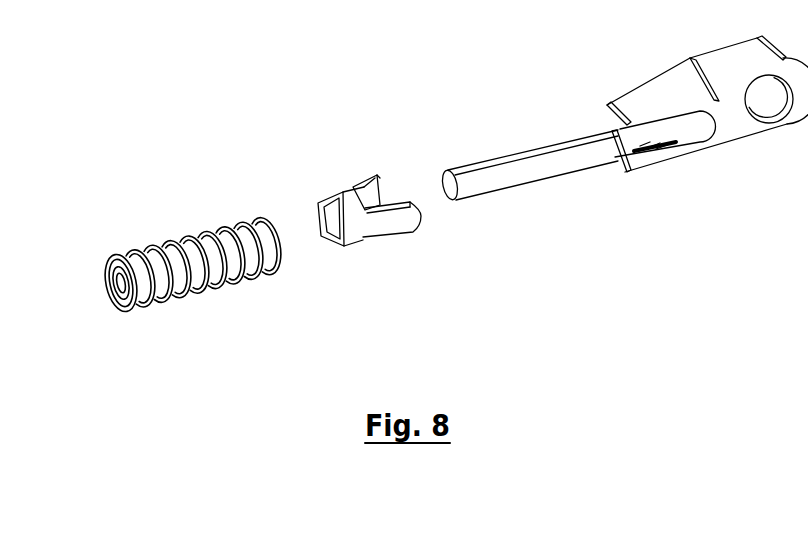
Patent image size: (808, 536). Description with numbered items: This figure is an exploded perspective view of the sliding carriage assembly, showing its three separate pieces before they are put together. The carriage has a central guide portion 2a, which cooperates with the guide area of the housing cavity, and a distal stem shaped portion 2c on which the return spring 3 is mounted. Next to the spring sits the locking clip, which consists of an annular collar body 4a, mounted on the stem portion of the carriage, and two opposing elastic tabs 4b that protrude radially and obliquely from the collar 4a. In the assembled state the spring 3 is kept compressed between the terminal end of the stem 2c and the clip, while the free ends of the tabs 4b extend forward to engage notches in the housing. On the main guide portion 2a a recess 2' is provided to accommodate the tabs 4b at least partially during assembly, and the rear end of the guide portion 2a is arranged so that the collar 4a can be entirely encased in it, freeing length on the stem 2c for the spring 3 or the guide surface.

The central guide portion 2a is at (629, 96).
The distal stem shaped portion 2c is at (528, 170).
The recess 2' is at (682, 156).
The return spring 3 is at (200, 288).
The annular collar body 4a is at (350, 227).
The elastic tab 4b is at (355, 180).